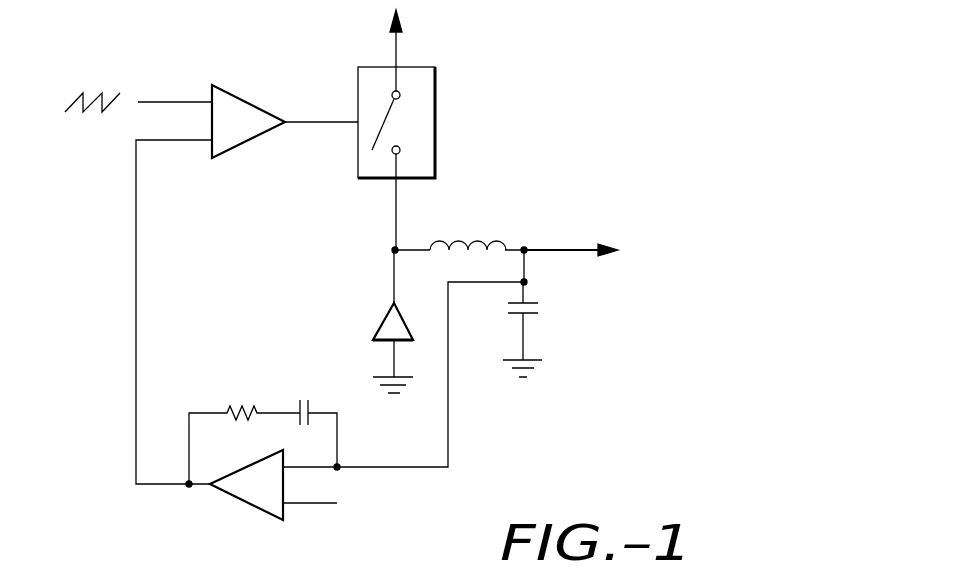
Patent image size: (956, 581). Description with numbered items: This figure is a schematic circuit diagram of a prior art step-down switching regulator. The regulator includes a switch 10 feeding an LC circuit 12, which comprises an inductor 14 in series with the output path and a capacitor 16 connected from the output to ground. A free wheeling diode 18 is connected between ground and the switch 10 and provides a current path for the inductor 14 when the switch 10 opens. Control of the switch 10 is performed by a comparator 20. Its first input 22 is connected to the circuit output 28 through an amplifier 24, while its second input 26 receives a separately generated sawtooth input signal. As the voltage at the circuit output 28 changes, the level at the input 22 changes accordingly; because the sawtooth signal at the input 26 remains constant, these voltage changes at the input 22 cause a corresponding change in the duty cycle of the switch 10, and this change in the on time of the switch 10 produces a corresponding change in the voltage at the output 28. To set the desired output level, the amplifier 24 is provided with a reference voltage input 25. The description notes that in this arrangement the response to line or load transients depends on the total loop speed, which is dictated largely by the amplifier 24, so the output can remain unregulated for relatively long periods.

The switch 10 is at (455, 113).
The LC circuit 12 is at (532, 230).
The inductor 14 is at (478, 238).
The capacitor 16 is at (544, 330).
The free wheeling diode 18 is at (362, 324).
The comparator 20 is at (251, 86).
The first input 22 is at (170, 145).
The amplifier 24 is at (231, 521).
The reference voltage input 25 is at (310, 506).
The second input 26 is at (172, 100).
The circuit output 28 is at (679, 227).